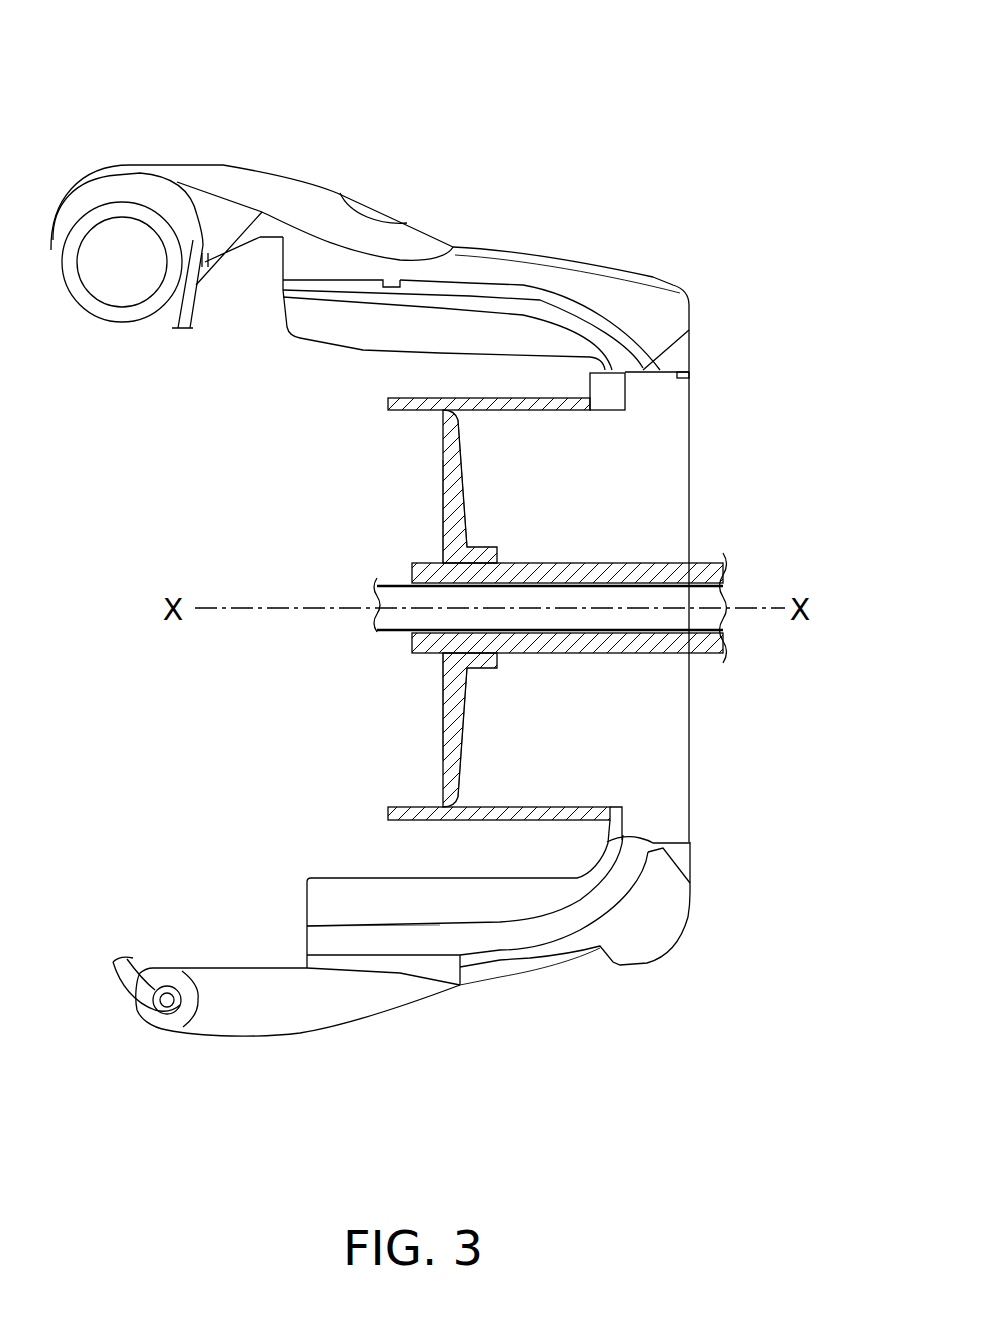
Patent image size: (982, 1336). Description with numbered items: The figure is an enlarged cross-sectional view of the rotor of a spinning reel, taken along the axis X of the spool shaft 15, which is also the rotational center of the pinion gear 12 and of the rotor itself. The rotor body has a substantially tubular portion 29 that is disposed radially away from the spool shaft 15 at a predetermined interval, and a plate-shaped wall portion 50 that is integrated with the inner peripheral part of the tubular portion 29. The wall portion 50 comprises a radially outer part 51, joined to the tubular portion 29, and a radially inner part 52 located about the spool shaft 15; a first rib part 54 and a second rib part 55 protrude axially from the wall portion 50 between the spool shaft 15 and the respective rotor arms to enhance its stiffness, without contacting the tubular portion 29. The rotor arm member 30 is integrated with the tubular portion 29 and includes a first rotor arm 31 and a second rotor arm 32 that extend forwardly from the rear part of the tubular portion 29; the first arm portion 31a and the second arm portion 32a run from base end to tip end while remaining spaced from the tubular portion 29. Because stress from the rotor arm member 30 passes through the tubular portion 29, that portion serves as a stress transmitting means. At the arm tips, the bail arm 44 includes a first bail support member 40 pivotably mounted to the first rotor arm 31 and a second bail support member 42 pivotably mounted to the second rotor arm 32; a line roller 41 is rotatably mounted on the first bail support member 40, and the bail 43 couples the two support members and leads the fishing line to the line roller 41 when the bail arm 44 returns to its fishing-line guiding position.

The pinion gear 12 is at (640, 570).
The spool shaft 15 is at (710, 625).
The tubular portion 29 is at (412, 394).
The rotor arm member 30 is at (486, 586).
The first rotor arm 31 is at (486, 480).
The first arm portion 31a is at (403, 330).
The second rotor arm 32 is at (498, 960).
The second arm portion 32a is at (455, 917).
The first bail support member 40 is at (252, 236).
The line roller 41 is at (97, 312).
The second bail support member 42 is at (319, 1030).
The bail 43 is at (187, 302).
The bail arm 44 is at (138, 130).
The wall portion 50 is at (418, 610).
The radially outer part 51 is at (441, 418).
The radially inner part 52 is at (441, 508).
The first rib part 54 is at (460, 440).
The second rib part 55 is at (460, 770).